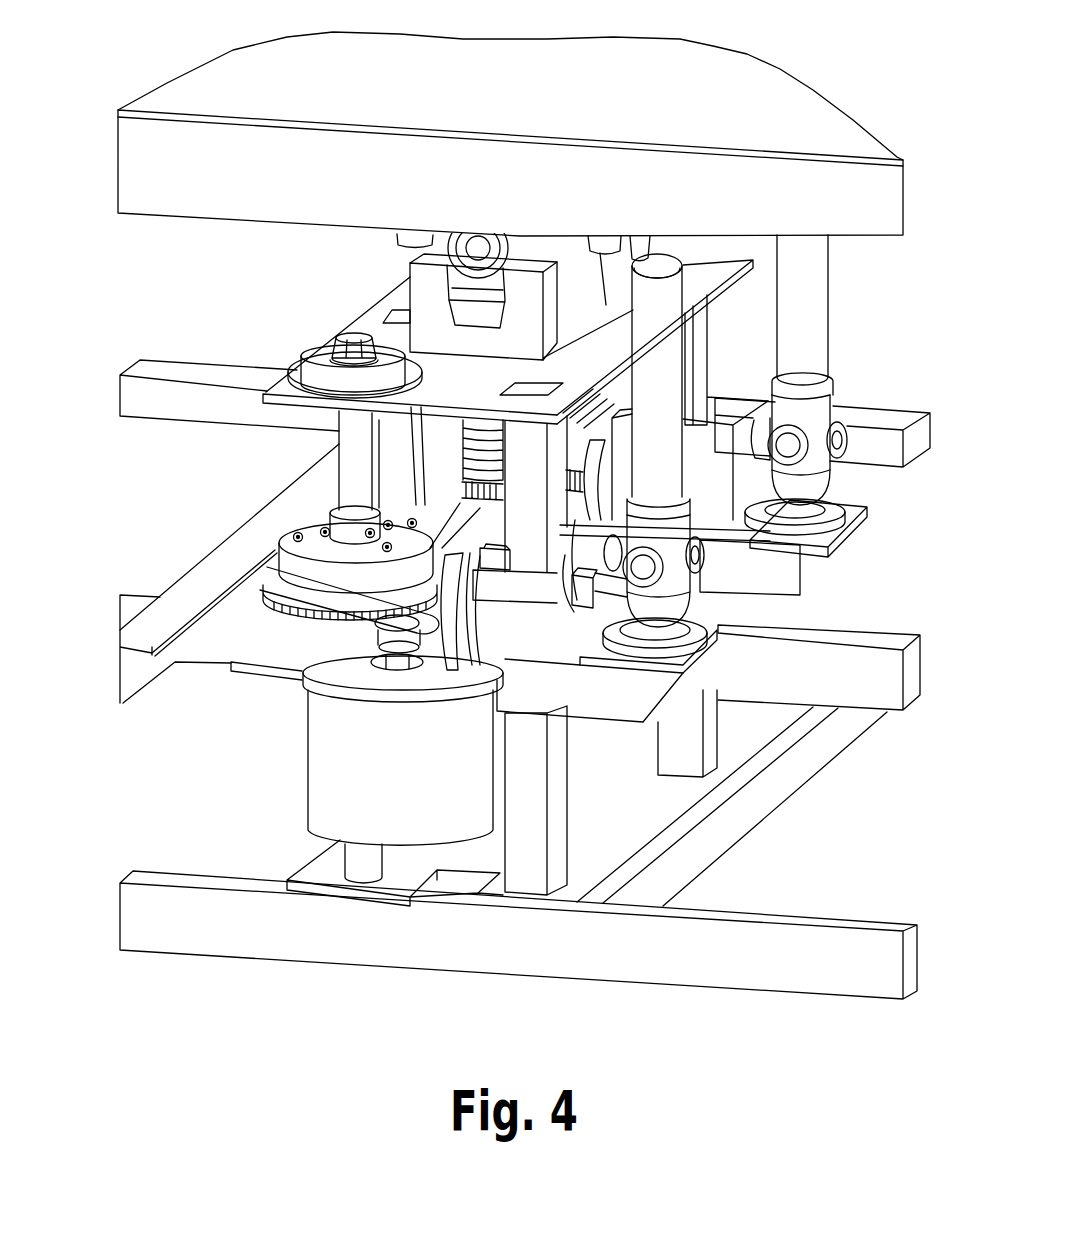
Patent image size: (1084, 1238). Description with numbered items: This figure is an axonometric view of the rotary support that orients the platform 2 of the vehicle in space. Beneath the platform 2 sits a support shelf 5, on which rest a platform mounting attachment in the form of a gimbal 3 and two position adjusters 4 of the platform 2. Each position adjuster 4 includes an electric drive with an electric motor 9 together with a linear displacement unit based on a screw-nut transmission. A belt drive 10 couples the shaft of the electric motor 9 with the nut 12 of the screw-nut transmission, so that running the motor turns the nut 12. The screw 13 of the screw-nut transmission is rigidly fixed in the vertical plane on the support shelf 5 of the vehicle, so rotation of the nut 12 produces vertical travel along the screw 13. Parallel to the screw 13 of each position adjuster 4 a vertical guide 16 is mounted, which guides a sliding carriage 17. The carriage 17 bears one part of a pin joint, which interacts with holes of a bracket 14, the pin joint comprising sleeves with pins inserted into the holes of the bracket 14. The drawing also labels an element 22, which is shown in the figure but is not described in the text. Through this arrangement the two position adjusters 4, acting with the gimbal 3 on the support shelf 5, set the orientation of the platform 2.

The platform 2 is at (190, 166).
The gimbal 3 is at (467, 250).
The position adjuster 4 is at (314, 579).
The support shelf 5 is at (370, 332).
The electric motor 9 is at (323, 784).
The belt drive 10 is at (326, 621).
The nut 12 is at (271, 577).
The screw 13 is at (350, 478).
The bracket 14 is at (477, 607).
The vertical guide 16 is at (528, 462).
The carriage 17 is at (780, 573).
The drive shaft with universal joint 22 is at (808, 353).